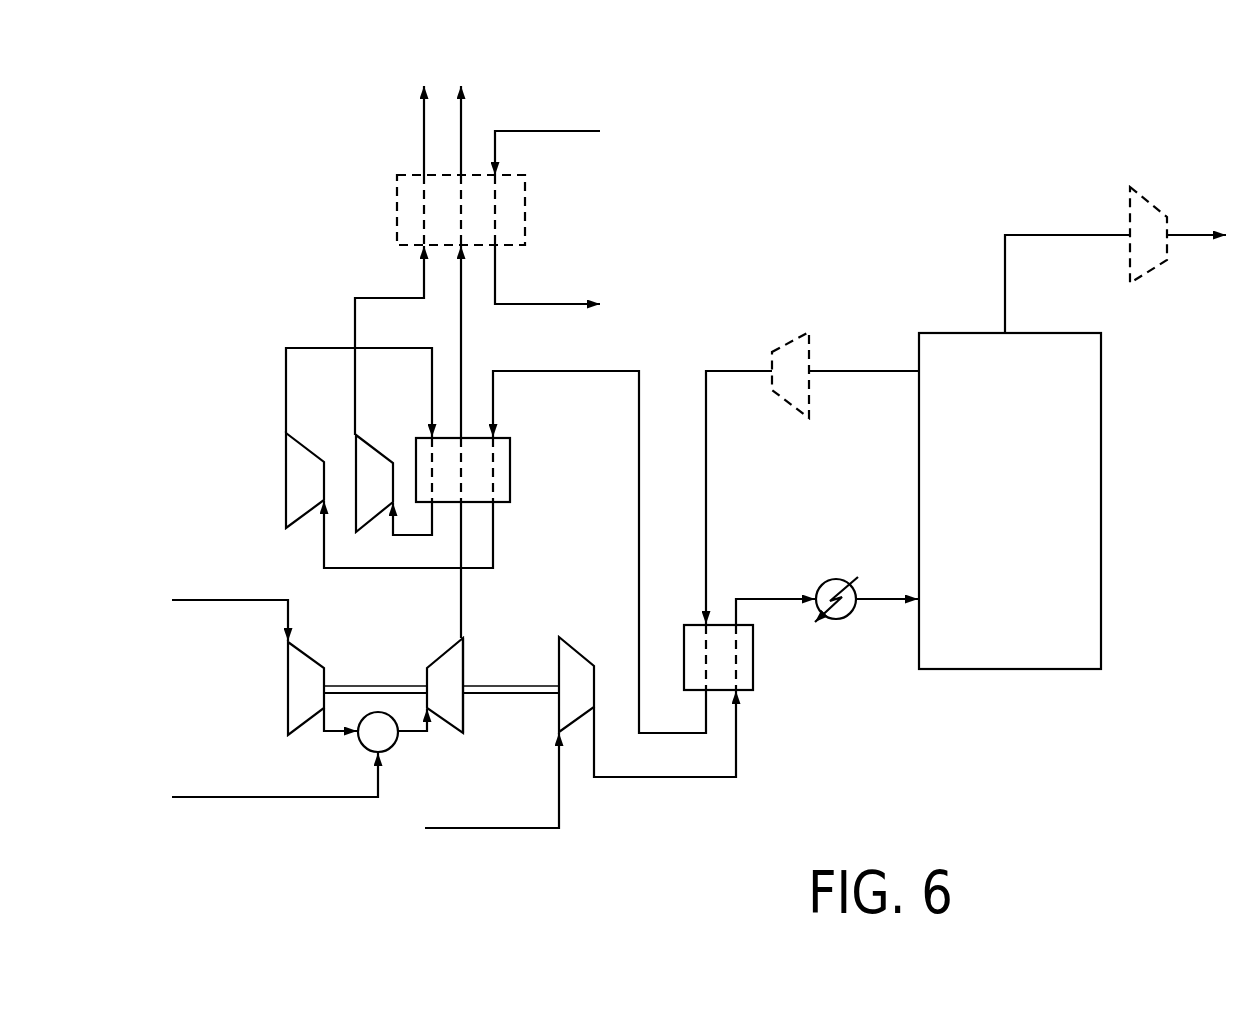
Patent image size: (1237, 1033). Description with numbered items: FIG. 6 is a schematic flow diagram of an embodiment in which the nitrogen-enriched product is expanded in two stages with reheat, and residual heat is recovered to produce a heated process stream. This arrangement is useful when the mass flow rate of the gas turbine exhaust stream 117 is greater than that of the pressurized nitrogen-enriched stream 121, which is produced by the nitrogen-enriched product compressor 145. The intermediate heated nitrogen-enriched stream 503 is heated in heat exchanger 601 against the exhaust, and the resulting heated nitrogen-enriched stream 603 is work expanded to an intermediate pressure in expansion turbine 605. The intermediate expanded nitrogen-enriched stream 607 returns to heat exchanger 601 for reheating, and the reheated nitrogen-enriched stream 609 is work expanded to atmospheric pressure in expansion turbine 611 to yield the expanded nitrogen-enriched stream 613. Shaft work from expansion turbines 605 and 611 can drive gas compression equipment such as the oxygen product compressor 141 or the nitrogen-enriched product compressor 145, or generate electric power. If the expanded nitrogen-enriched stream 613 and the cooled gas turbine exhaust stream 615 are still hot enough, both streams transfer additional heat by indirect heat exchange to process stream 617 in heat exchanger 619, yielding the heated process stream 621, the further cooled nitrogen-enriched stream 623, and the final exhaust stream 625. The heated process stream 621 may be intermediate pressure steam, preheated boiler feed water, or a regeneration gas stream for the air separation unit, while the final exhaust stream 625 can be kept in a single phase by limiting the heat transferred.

The expansion turbine exhaust stream 117 is at (463, 600).
The pressurized nitrogen-enriched stream 121 is at (740, 371).
The oxygen product compressor 141 is at (1130, 210).
The nitrogen-enriched product compressor 145 is at (812, 336).
The intermediate heated nitrogen-enriched stream 503 is at (639, 420).
The heat exchanger 601 is at (510, 468).
The heated nitrogen-enriched stream 603 is at (413, 568).
The expansion turbine 605 is at (286, 484).
The intermediate expanded nitrogen-enriched stream 607 is at (286, 393).
The reheated nitrogen-enriched stream 609 is at (392, 521).
The expansion turbine 611 is at (370, 447).
The expanded nitrogen-enriched stream 613 is at (424, 277).
The cooled gas turbine exhaust stream 615 is at (461, 342).
The process stream 617 is at (560, 131).
The heat exchanger 619 is at (525, 215).
The heated process stream 621 is at (548, 303).
The further cooled nitrogen-enriched stream 623 is at (424, 143).
The final exhaust stream 625 is at (461, 112).